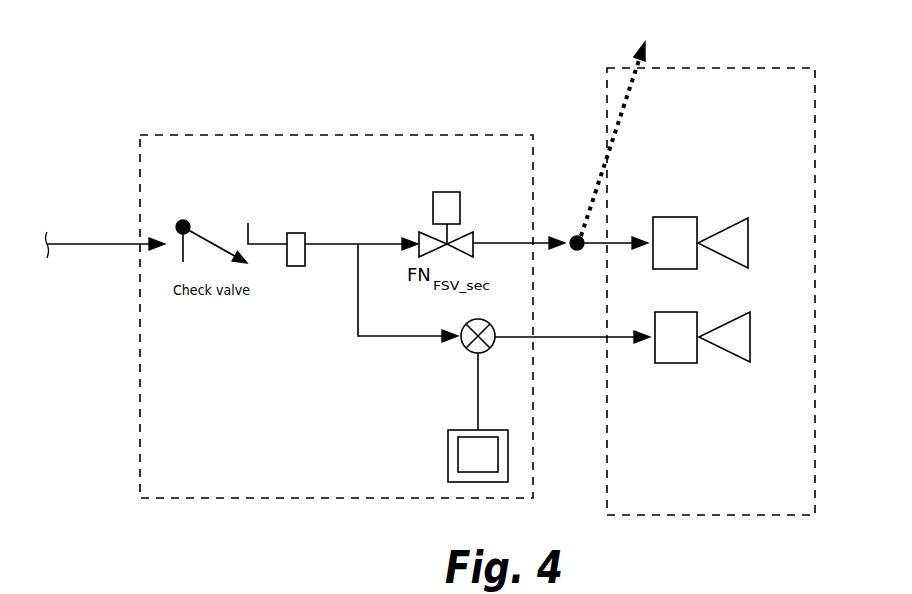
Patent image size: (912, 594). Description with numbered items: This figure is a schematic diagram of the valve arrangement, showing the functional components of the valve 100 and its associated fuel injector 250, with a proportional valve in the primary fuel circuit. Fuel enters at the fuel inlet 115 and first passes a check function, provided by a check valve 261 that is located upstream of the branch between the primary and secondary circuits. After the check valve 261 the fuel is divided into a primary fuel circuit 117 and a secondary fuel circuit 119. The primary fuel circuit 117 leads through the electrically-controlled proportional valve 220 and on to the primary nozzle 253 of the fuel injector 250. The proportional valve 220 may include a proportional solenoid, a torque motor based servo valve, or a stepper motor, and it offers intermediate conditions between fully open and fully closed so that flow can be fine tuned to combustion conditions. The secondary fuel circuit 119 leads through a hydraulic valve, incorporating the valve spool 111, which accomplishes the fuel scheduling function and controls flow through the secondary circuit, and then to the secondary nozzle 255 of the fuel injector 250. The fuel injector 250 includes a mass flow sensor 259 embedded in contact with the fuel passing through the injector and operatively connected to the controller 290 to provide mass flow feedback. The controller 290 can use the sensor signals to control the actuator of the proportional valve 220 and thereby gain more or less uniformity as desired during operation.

The valve 100 is at (200, 112).
The fuel inlet 115 is at (112, 244).
The check valve 261 is at (296, 278).
The valve spool 111 is at (433, 192).
The secondary fuel circuit 119 is at (504, 240).
The mass flow sensor 259 is at (580, 240).
The controller 290 is at (650, 126).
The fuel injector 250 is at (763, 53).
The secondary nozzle 255 is at (749, 232).
The primary nozzle 253 is at (750, 340).
The primary fuel circuit 117 is at (568, 340).
The proportional valve 220 is at (458, 428).